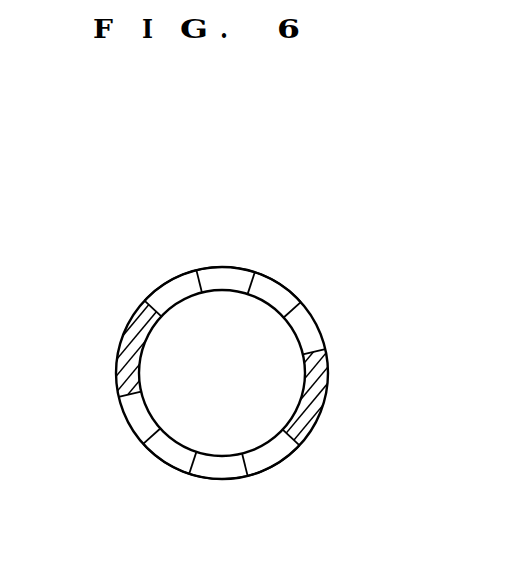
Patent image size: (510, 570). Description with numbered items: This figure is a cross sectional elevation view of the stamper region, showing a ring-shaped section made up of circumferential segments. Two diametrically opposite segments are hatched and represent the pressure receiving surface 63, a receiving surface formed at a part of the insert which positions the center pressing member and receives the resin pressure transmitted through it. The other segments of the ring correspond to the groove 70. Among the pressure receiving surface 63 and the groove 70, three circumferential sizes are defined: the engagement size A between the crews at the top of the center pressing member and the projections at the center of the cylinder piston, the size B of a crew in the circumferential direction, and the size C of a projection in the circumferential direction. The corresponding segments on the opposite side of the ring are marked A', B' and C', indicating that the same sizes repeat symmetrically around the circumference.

The groove 70 is at (313, 331).
The pressure receiving surface 63 is at (317, 390).
The engagement size A is at (225, 241).
The size of the crew B is at (296, 256).
The size of the projection C is at (163, 262).
The sector A' of ring A' is at (218, 502).
The sector B' of ring B' is at (154, 492).
The sector C' of ring C' is at (295, 478).